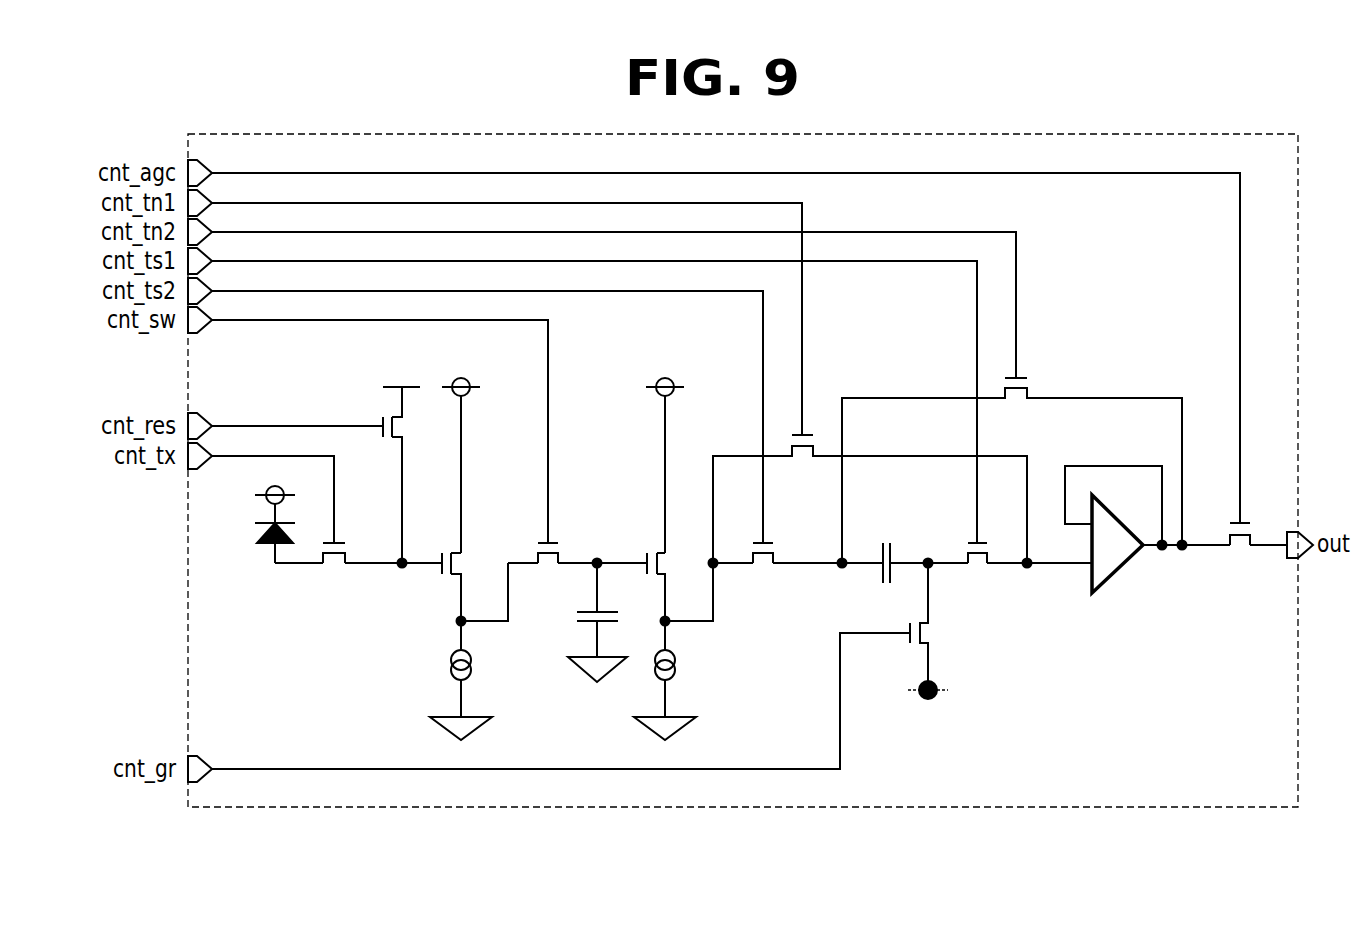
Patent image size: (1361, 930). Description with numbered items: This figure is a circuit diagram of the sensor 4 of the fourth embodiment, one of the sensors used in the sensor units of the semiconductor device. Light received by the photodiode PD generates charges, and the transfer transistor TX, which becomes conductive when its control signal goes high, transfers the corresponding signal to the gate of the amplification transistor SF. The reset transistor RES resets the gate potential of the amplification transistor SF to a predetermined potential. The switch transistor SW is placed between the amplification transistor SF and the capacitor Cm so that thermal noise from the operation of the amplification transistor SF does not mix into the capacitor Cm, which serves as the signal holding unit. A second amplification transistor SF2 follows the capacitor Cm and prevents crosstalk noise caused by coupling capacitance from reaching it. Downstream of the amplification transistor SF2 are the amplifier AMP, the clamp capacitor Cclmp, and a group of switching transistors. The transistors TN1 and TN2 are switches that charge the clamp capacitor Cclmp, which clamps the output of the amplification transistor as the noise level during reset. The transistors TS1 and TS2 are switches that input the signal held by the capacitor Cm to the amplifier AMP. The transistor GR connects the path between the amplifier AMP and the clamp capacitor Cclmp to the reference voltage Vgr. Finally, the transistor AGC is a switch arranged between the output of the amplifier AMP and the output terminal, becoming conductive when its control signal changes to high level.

The sensor 4 is at (184, 685).
The photodiode PD is at (257, 533).
The transfer transistor TX is at (338, 572).
The reset transistor RES is at (392, 417).
The amplification transistor SF is at (444, 578).
The switch transistor SW is at (543, 543).
The capacitor Cm is at (574, 614).
The amplification transistor SF2 is at (650, 549).
The transistor TN1 is at (802, 459).
The transistor TS2 is at (763, 570).
The clamp capacitor Cclmp is at (886, 540).
The transistor GR is at (934, 636).
The reference voltage Vgr is at (929, 707).
The transistor TS1 is at (978, 570).
The transistor TN2 is at (1023, 373).
The amplifier AMP is at (1096, 596).
The transistor AGC is at (1240, 549).